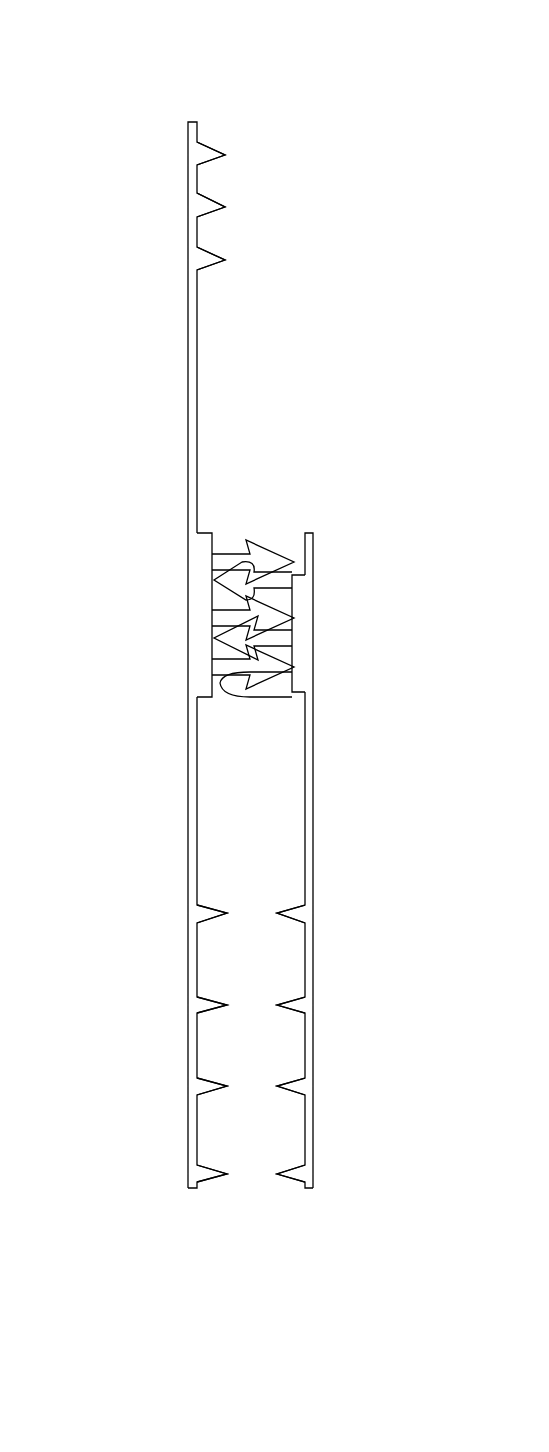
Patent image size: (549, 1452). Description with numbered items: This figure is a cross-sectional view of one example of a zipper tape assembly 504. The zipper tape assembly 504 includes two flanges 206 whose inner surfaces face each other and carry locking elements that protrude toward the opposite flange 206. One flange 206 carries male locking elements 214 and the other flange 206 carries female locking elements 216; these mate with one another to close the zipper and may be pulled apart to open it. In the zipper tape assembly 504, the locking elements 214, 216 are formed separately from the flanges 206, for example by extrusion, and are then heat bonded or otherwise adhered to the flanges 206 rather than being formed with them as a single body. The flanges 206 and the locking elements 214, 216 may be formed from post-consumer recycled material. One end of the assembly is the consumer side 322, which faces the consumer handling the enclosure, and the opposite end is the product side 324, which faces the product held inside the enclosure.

The zipper tape assembly 504 is at (115, 224).
The flange 206 is at (188, 370).
The male locking element 214 is at (257, 583).
The female locking element 216 is at (223, 592).
The consumer side 322 is at (234, 143).
The product side 324 is at (255, 1188).